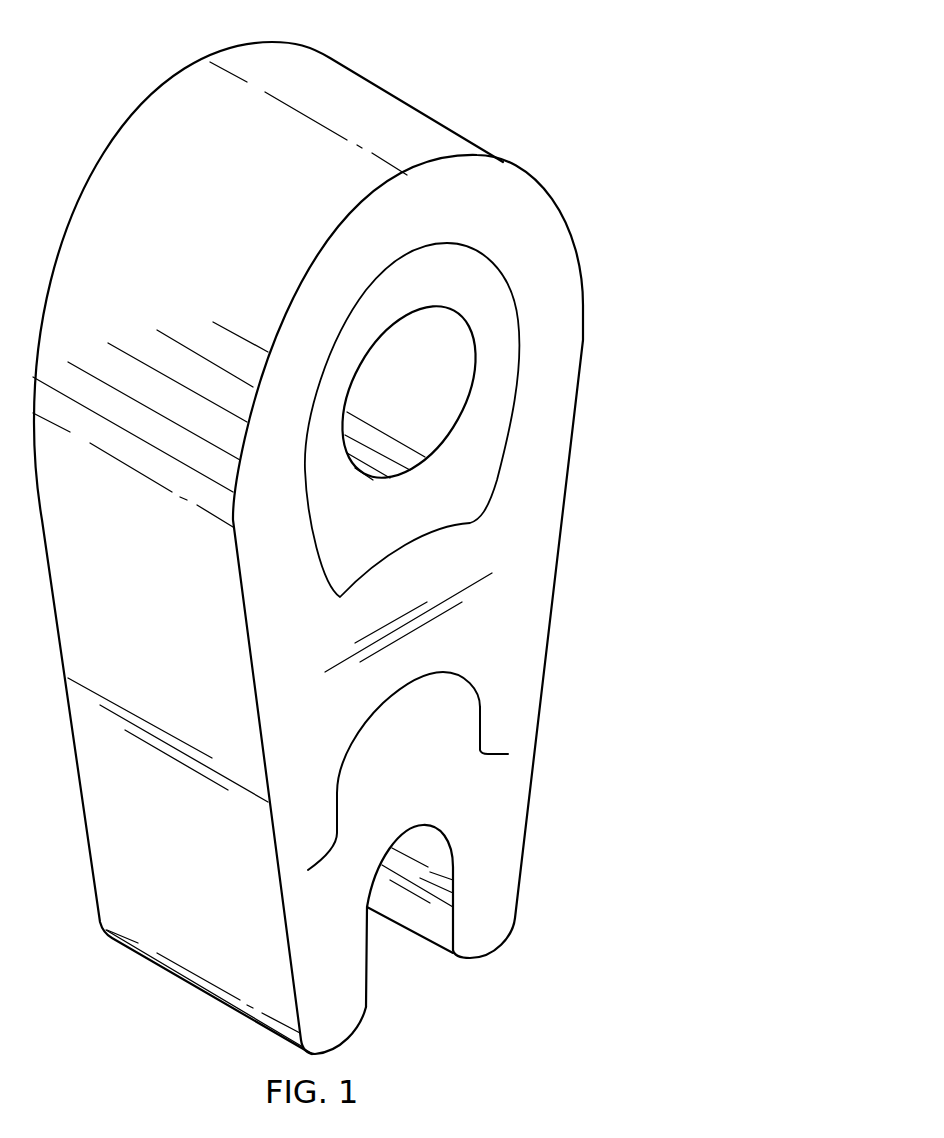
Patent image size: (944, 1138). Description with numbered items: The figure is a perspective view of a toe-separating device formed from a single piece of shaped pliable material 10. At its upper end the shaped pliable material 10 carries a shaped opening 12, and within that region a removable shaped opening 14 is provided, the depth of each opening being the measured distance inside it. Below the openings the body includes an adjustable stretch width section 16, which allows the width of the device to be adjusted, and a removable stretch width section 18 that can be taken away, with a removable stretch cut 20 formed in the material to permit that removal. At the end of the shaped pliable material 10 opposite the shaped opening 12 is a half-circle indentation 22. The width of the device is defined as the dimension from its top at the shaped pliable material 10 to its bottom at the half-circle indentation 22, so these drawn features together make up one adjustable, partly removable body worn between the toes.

The shaped pliable material 10 is at (312, 92).
The shaped opening 12 is at (510, 288).
The removable shaped opening 14 is at (488, 393).
The adjustable stretch width section 16 is at (438, 640).
The removable stretch width section 18 is at (413, 775).
The removable stretch cut 20 is at (477, 717).
The half-circle indentation 22 is at (385, 933).